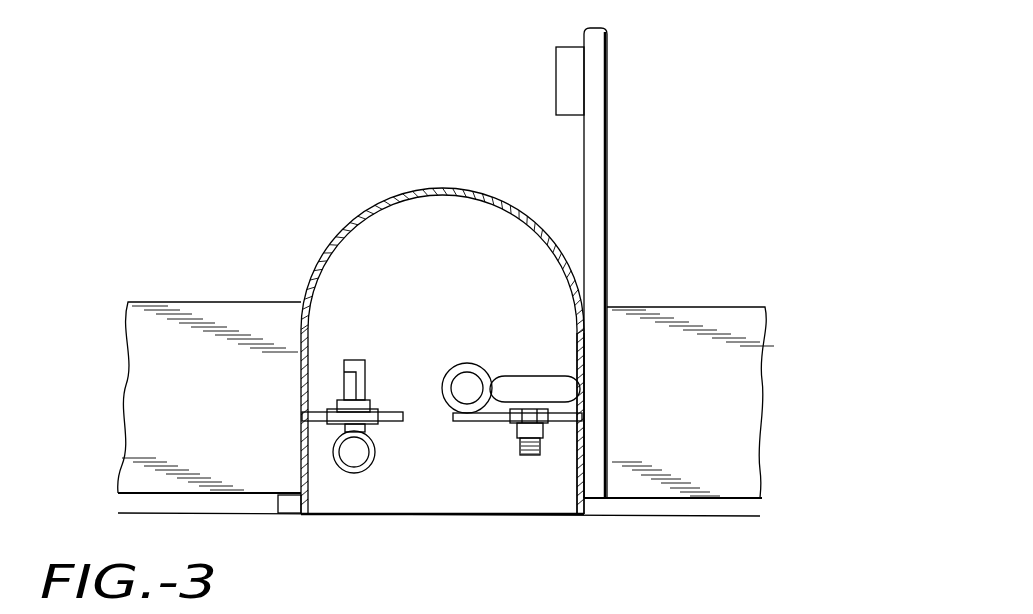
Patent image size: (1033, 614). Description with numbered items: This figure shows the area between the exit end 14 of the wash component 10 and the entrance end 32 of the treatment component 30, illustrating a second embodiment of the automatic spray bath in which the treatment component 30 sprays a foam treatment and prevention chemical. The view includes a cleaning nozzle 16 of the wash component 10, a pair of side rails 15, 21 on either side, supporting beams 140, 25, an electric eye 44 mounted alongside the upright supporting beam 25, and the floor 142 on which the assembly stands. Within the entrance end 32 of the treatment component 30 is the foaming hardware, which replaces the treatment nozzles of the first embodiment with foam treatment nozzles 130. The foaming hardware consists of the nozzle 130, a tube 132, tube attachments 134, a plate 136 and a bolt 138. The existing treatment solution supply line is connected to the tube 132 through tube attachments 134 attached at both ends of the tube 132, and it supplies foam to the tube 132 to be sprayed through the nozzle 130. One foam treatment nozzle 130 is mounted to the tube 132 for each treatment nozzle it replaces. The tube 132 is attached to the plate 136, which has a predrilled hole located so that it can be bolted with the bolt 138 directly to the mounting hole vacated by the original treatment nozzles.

The wash component 10 is at (203, 257).
The exit end 14 is at (308, 336).
The side rail 15 is at (233, 384).
The cleaning nozzle 16 is at (365, 386).
The side rail 21 is at (701, 388).
The supporting beam 25 is at (600, 38).
The treatment component 30 is at (741, 227).
The entrance end 32 is at (576, 333).
The electric eye 44 is at (570, 80).
The foam treatment nozzle 130 is at (535, 383).
The tube 132 is at (461, 370).
The tube attachment 134 is at (471, 388).
The plate 136 is at (484, 424).
The bolt 138 is at (528, 456).
The supporting beam 140 is at (294, 500).
The floor 142 is at (188, 515).